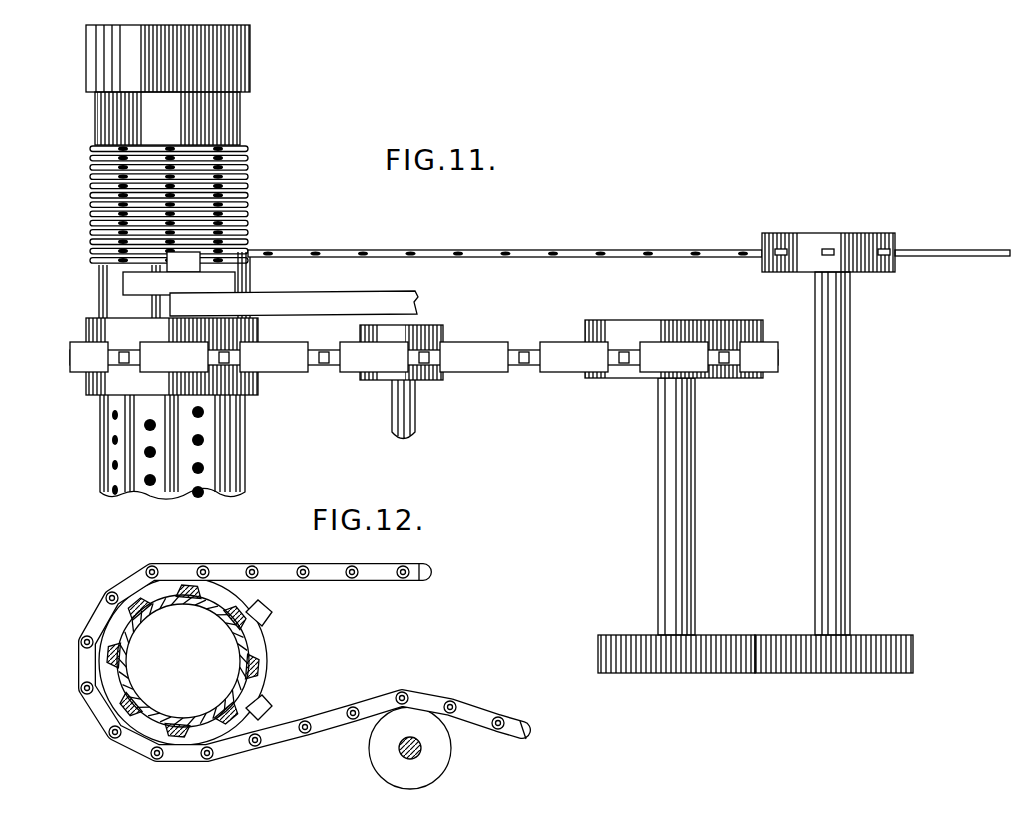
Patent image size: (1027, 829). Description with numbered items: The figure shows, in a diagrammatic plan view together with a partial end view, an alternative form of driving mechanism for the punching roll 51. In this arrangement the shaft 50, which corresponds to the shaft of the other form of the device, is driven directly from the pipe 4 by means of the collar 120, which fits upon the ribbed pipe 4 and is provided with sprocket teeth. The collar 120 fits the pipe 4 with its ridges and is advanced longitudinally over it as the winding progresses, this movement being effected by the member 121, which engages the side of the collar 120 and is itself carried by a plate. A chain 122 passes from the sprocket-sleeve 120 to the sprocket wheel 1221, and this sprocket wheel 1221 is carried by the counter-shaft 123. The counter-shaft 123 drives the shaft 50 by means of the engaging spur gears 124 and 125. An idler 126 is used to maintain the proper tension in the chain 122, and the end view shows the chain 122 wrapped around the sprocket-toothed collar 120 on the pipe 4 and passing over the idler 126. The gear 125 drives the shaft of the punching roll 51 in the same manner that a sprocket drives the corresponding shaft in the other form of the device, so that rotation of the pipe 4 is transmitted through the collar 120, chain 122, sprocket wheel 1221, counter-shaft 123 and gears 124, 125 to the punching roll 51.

In FIG. 11, the pipe 4 is at (225, 118).
In FIG. 12, the pipe 4 is at (240, 659).
In FIG. 11, the collar 120 is at (262, 388).
In FIG. 12, the collar 120 is at (266, 659).
In FIG. 11, the member 121 is at (347, 298).
In FIG. 11, the chain 122 is at (527, 344).
In FIG. 12, the chain 122 is at (372, 574).
In FIG. 11, the sprocket wheel 1221 is at (718, 318).
In FIG. 11, the counter-shaft 123 is at (668, 503).
In FIG. 11, the spur gear 124 is at (724, 662).
In FIG. 11, the spur gear 125 is at (830, 662).
In FIG. 11, the idler 126 is at (432, 385).
In FIG. 12, the idler 126 is at (440, 760).
In FIG. 11, the shaft 50 is at (840, 430).
In FIG. 11, the punching roll 51 is at (830, 233).